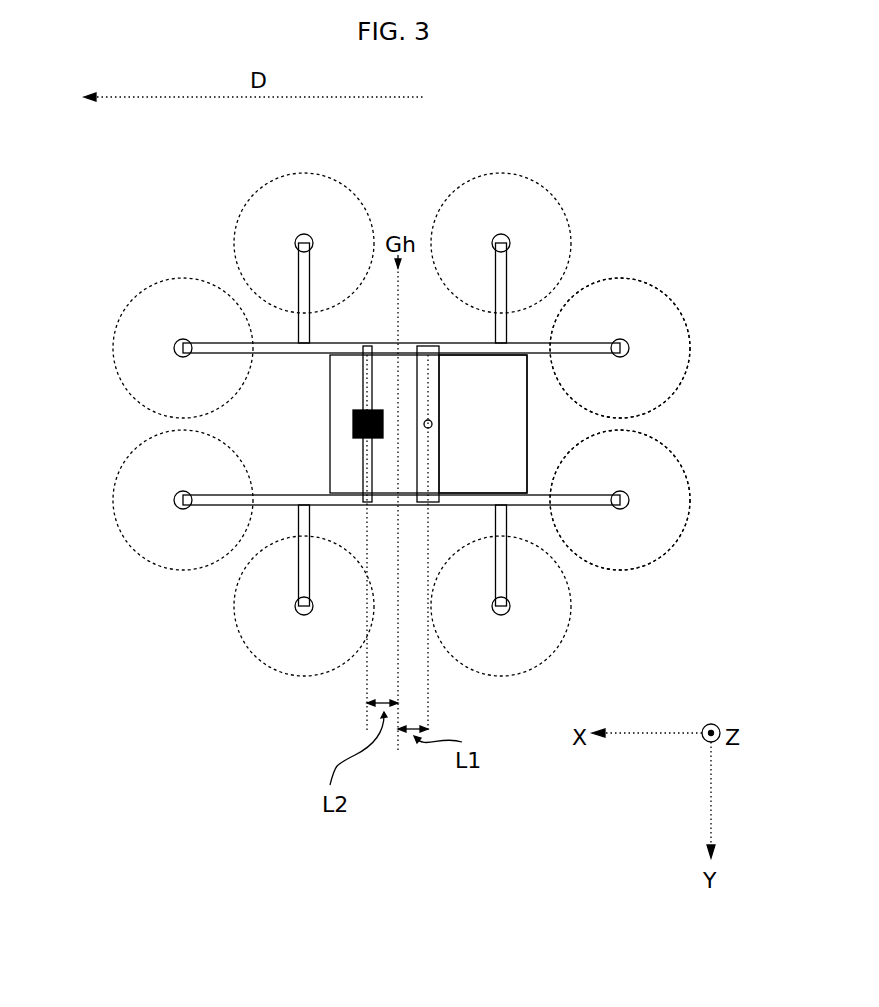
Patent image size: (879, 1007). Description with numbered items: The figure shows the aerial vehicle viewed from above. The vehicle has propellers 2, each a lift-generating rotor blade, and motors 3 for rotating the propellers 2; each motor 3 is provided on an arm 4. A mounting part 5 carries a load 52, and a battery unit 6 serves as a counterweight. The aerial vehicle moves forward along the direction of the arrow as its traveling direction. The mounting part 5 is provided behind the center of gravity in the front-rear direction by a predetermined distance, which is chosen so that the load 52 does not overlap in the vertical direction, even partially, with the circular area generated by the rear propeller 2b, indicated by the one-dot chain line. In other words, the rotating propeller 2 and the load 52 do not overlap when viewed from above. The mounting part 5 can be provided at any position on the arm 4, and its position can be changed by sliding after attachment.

The propeller 2 is at (312, 180).
The rear propeller 2b is at (672, 315).
The motor 3 is at (176, 345).
The arm 4 is at (272, 354).
The mounting part 5 is at (434, 367).
The battery unit 6 is at (353, 425).
The load 52 is at (505, 437).